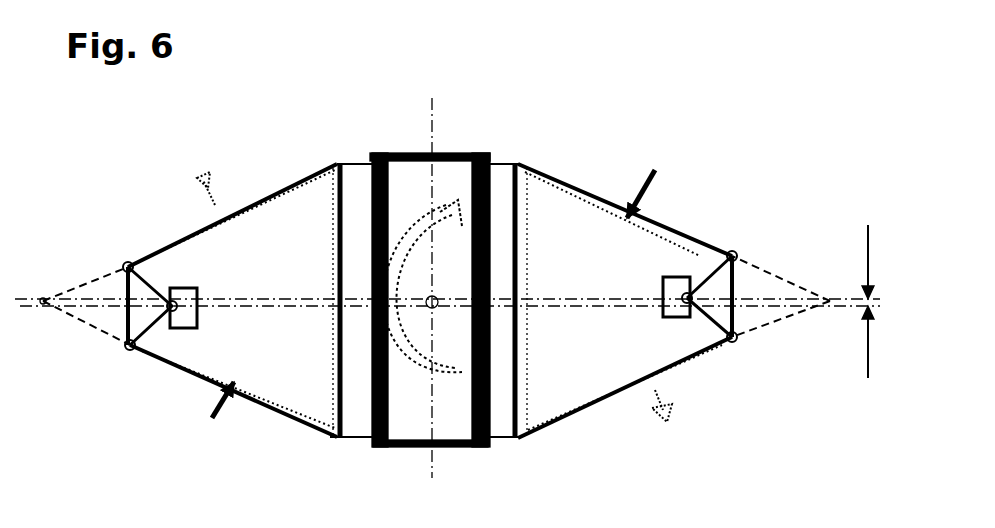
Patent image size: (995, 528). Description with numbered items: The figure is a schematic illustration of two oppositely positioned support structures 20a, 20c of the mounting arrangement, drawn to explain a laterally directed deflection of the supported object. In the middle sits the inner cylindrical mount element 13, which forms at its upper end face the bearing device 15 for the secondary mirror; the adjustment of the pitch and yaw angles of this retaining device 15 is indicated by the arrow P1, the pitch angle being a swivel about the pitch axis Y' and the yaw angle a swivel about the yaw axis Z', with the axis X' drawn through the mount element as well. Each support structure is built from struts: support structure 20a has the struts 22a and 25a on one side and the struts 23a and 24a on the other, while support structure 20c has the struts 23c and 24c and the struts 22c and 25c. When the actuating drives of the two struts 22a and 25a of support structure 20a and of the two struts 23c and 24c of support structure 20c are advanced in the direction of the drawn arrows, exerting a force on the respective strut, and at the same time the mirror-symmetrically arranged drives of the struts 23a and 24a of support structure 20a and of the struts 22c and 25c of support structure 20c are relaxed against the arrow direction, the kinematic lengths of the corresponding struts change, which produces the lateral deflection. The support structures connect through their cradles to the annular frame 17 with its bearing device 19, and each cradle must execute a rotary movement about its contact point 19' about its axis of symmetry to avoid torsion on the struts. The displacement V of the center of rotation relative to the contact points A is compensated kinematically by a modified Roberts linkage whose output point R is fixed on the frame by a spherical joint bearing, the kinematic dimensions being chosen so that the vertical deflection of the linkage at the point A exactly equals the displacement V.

The inner cylindrical mount element 13 is at (417, 412).
The bearing device 15 is at (481, 150).
The annular frame 17 is at (659, 303).
The bearing device 19 is at (717, 368).
The contact point of the cradle 19' is at (716, 238).
The support structure 20a is at (621, 184).
The support structure 20c is at (145, 226).
The strut 22a is at (675, 228).
The strut 22c is at (283, 190).
The strut 23a is at (690, 372).
The strut 23c is at (262, 406).
The strut 24a is at (590, 408).
The strut 24c is at (175, 370).
The strut 25a is at (587, 190).
The strut 25c is at (170, 234).
The arrow P1 is at (405, 256).
The axis X' is at (418, 253).
The pitch axis Y' is at (548, 301).
The yaw axis Z' is at (447, 343).
The output point of the Roberts linkage R is at (746, 259).
The contact point A is at (688, 318).
The displacement of the center of rotation V is at (859, 301).